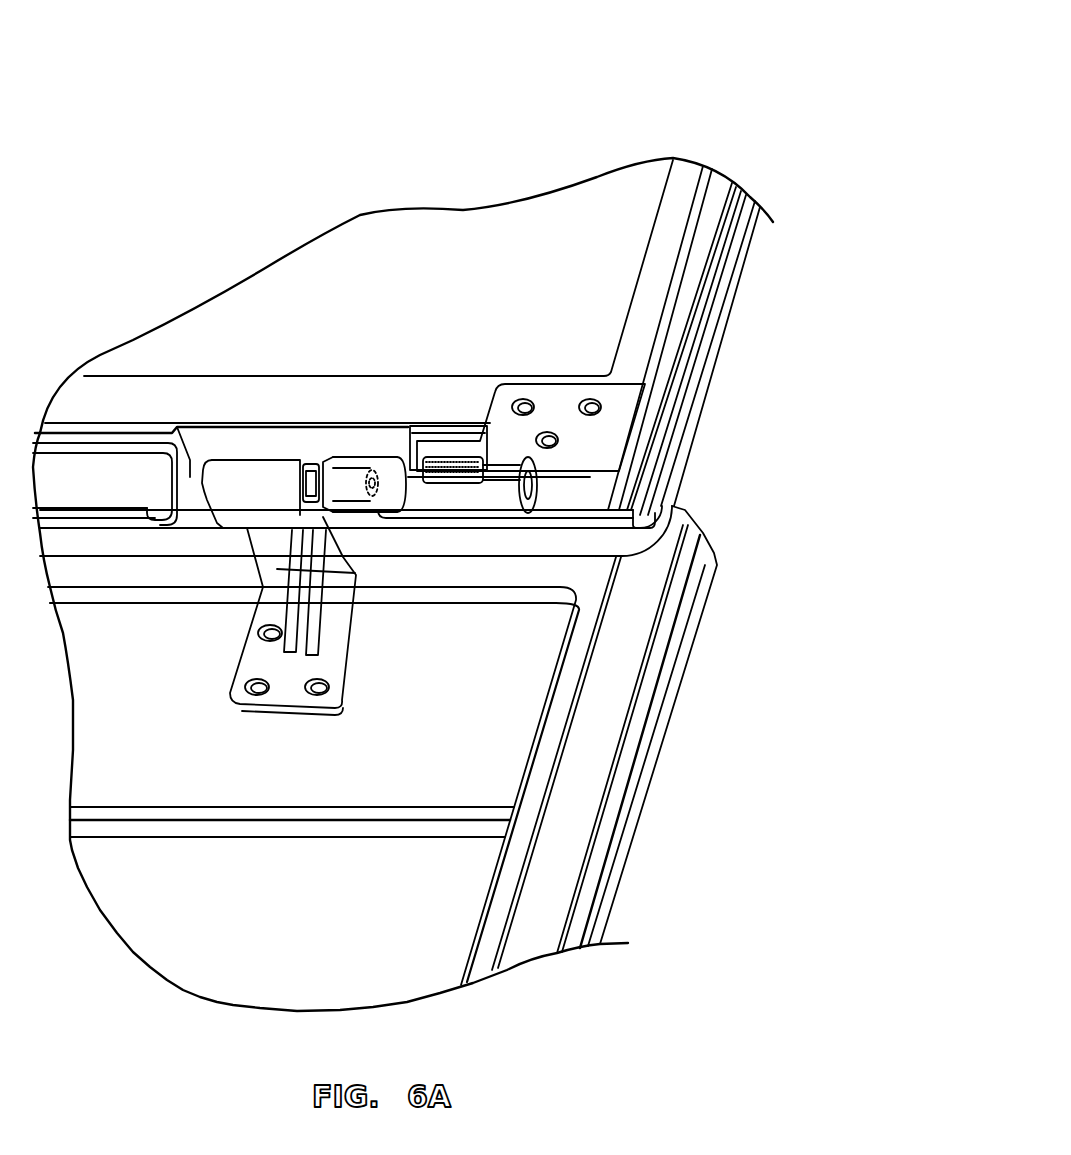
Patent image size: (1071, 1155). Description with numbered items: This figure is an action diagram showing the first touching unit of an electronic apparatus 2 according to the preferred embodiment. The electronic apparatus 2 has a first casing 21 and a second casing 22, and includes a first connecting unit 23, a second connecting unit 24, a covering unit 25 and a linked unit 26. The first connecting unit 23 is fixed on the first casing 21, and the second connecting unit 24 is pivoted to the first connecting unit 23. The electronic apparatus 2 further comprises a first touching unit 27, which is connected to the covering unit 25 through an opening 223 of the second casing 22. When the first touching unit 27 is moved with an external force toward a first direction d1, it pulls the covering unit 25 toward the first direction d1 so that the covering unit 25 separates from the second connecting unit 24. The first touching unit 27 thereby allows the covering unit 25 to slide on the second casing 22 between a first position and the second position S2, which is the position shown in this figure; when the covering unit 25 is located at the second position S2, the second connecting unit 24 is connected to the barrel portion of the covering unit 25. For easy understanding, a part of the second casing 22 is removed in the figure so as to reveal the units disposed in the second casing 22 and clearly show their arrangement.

The electronic apparatus 2 is at (749, 39).
The first casing 21 is at (670, 835).
The second casing 22 is at (735, 377).
The first connecting unit 23 is at (260, 482).
The second connecting unit 24 is at (313, 463).
The covering unit 25 is at (352, 457).
The linked unit 26 is at (610, 408).
The first touching unit 27 is at (445, 447).
The opening 223 is at (516, 452).
The second position S2 is at (364, 536).
The first direction d1 is at (727, 540).